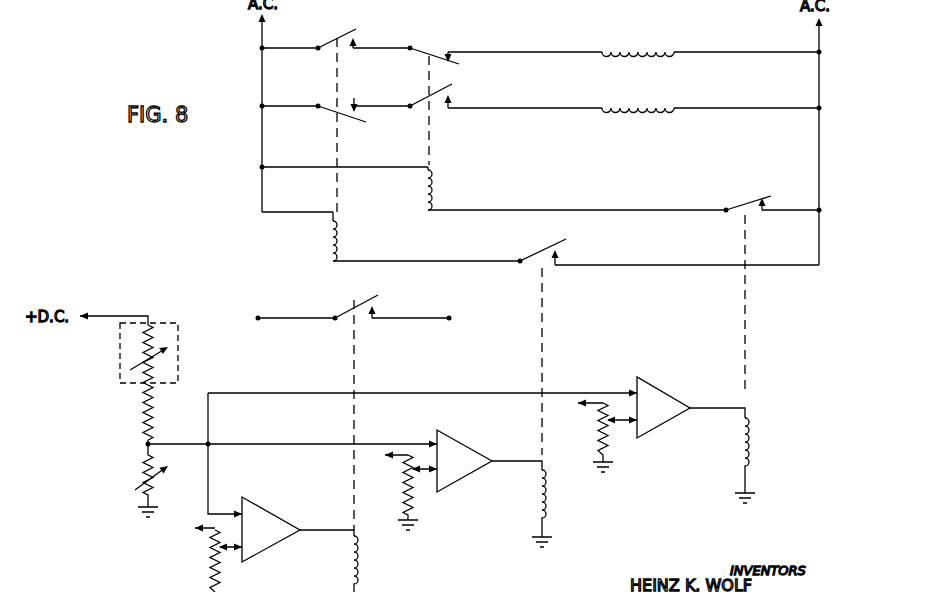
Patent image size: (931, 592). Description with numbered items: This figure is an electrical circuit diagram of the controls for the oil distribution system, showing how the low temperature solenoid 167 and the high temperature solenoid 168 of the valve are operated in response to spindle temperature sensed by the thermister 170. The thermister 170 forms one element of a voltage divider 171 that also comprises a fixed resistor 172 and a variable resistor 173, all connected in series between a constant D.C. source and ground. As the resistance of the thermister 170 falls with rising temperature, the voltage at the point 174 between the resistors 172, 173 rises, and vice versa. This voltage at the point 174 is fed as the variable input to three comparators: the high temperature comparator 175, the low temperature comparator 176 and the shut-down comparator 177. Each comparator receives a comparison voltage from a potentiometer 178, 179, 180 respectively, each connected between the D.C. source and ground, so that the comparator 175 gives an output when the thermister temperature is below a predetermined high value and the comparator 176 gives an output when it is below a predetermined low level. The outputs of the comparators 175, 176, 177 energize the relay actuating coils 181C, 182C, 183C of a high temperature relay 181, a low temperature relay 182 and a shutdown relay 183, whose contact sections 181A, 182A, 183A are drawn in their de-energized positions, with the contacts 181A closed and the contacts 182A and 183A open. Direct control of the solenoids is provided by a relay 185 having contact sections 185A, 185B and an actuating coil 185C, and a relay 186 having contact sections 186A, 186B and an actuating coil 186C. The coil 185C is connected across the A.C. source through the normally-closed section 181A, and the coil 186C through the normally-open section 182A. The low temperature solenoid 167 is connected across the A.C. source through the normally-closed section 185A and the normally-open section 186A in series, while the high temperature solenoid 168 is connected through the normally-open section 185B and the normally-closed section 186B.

The low temperature solenoid 167 is at (642, 52).
The high temperature solenoid 168 is at (646, 108).
The thermister 170 is at (178, 378).
The voltage divider 171 is at (138, 437).
The fixed resistor 172 is at (152, 400).
The variable resistor 173 is at (152, 486).
The point 174 is at (151, 443).
The high temperature comparator 175 is at (664, 388).
The low temperature comparator 176 is at (457, 441).
The shut-down comparator 177 is at (272, 519).
The potentiometer 178 is at (608, 446).
The potentiometer 179 is at (412, 497).
The potentiometer 180 is at (224, 574).
The high temperature relay 181 is at (746, 366).
The relay contact section 181A is at (749, 203).
The relay actuating coil 181C is at (749, 430).
The low temperature relay 182 is at (543, 367).
The relay contact section 182A is at (545, 254).
The relay actuating coil 182C is at (546, 506).
The shutdown relay 183 is at (356, 352).
The relay contact section 183A is at (355, 308).
The relay actuating coil 183C is at (359, 562).
The relay 185 is at (429, 130).
The relay contact section 185A is at (434, 52).
The relay contact section 185B is at (452, 84).
The relay actuating coil 185C is at (433, 190).
The relay 186 is at (337, 128).
The relay contact section 186A is at (334, 44).
The relay contact section 186B is at (330, 108).
The relay actuating coil 186C is at (338, 249).